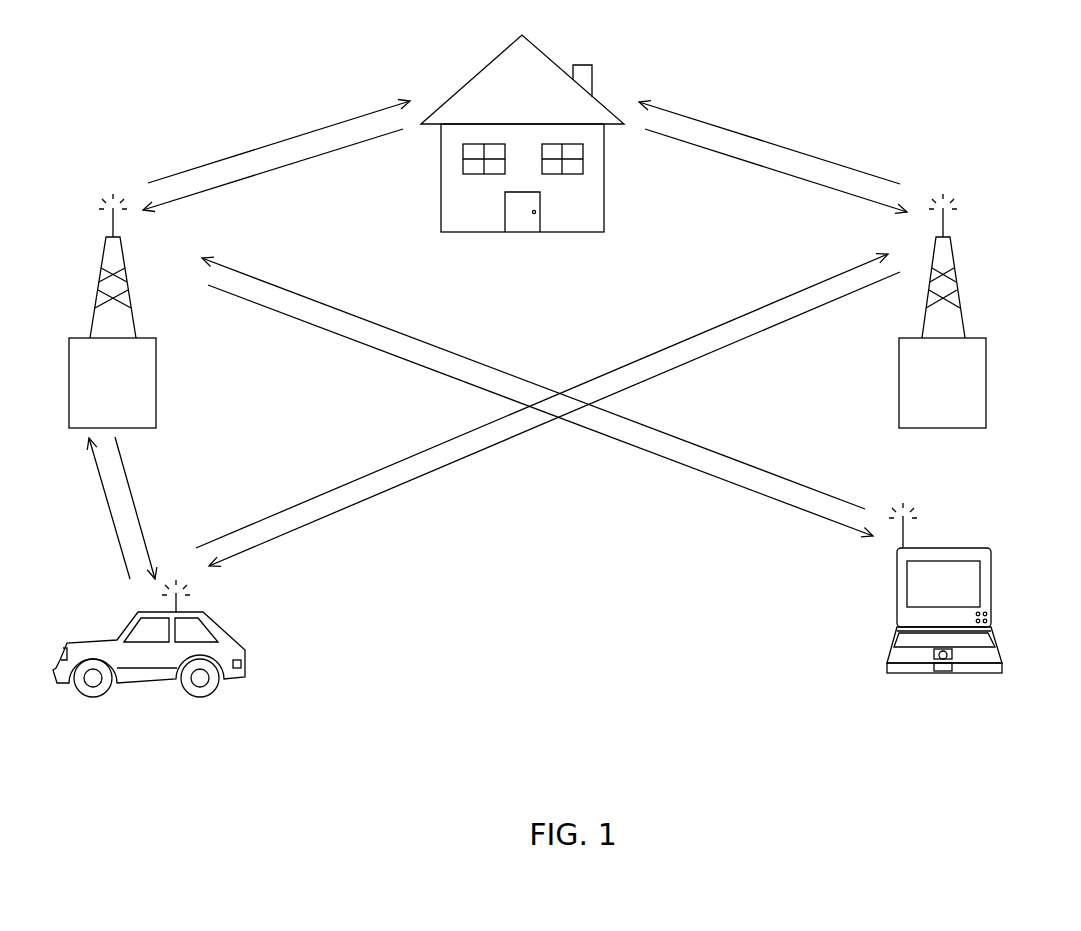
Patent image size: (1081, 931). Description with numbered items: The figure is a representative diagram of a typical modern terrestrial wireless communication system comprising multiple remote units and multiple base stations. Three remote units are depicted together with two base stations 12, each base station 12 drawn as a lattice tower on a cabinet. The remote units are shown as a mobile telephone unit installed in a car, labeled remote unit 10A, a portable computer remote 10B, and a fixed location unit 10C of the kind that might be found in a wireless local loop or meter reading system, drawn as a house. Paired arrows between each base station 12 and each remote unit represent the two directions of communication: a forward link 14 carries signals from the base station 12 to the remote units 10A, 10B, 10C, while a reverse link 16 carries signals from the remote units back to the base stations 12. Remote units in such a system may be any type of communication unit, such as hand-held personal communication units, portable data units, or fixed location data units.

The remote unit 10A is at (203, 612).
The portable computer remote 10B is at (973, 548).
The fixed location unit 10C is at (545, 50).
The base station 12 is at (150, 338).
The forward link 14 is at (285, 140).
The reverse link 16 is at (232, 185).